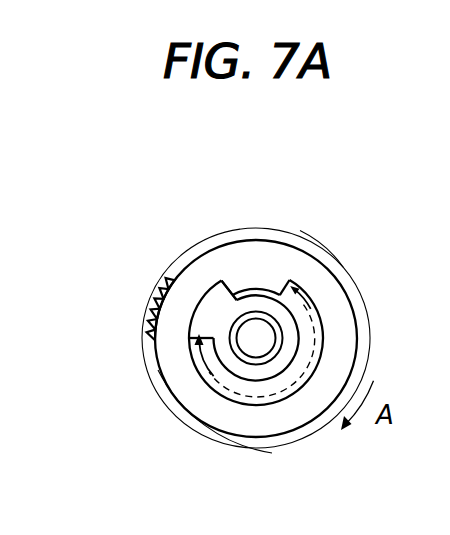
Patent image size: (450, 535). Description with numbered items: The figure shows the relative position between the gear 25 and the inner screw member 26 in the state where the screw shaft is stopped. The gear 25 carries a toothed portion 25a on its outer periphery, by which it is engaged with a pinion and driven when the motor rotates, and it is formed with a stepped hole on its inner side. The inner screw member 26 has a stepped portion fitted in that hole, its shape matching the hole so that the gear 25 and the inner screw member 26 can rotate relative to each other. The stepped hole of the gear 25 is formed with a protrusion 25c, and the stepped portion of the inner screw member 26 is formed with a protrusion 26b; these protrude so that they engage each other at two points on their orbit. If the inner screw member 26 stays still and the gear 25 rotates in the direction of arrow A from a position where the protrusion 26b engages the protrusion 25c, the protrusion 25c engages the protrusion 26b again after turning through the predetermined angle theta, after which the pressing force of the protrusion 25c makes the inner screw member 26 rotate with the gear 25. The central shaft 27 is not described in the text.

The gear 25 is at (360, 340).
The toothed portion 25a is at (147, 305).
The protrusion 25c is at (275, 282).
The inner screw member 26 is at (298, 316).
The protrusion 26b is at (218, 300).
The shaft 27 is at (248, 348).